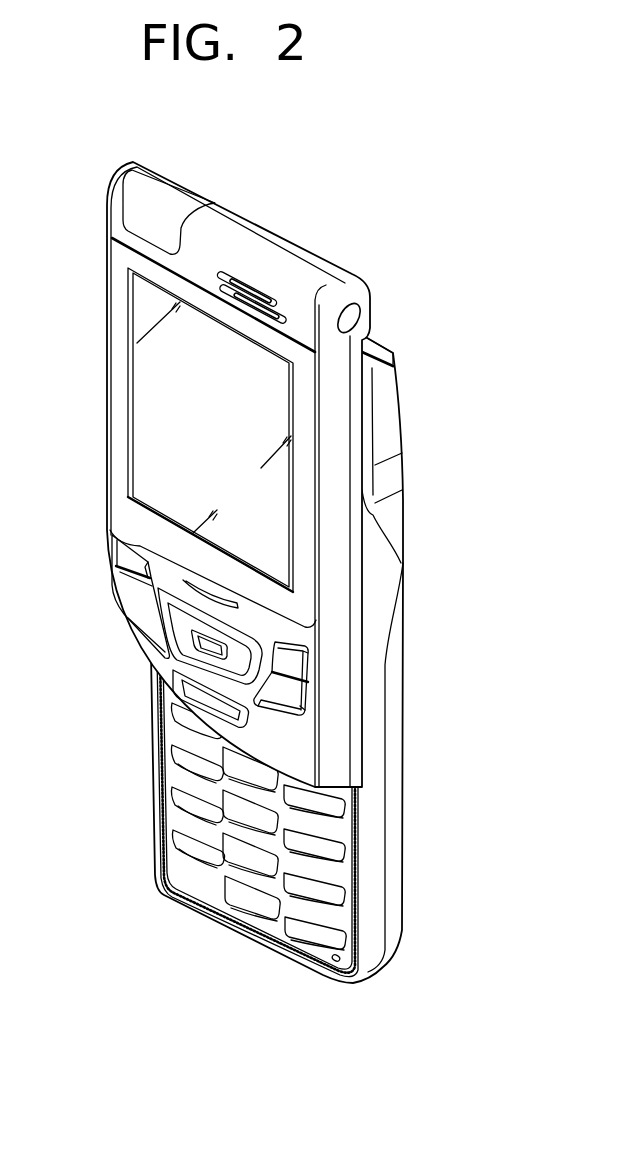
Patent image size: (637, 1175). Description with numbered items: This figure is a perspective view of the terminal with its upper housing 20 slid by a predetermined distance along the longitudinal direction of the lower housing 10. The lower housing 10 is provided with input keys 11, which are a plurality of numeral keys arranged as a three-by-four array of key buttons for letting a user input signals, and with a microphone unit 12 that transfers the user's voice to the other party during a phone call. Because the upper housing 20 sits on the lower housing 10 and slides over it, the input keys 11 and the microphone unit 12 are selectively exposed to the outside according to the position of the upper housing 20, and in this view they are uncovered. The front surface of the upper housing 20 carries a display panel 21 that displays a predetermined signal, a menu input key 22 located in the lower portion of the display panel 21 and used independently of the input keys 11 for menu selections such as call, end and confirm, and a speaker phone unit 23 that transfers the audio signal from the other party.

The lower housing 10 is at (414, 828).
The input keys 11 is at (268, 912).
The microphone unit 12 is at (333, 961).
The upper housing 20 is at (101, 645).
The display panel 21 is at (278, 412).
The menu input key 22 is at (285, 670).
The speaker phone unit 23 is at (247, 288).